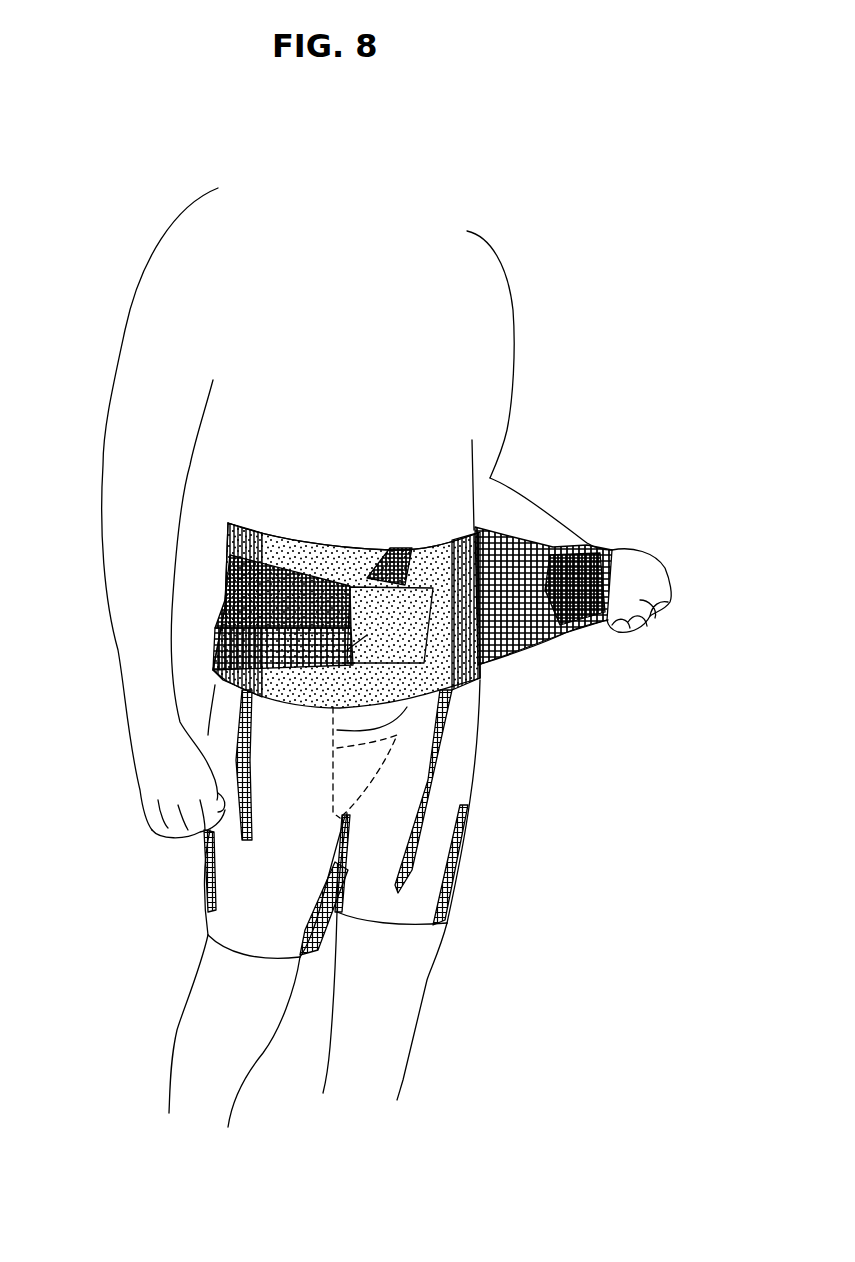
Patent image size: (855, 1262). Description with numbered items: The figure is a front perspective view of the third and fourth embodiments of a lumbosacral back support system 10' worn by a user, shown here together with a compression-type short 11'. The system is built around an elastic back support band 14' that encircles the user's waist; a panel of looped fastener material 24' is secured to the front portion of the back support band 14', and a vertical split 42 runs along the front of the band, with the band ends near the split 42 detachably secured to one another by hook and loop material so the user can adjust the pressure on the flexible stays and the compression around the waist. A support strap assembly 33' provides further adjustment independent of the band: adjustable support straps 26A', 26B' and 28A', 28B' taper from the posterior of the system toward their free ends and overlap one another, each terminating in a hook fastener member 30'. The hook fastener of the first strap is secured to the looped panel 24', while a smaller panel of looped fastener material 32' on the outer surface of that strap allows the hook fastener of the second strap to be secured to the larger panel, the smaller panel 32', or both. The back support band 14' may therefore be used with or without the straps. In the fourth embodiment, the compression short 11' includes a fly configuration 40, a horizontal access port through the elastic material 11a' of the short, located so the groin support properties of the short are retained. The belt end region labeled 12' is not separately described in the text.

The lumbosacral back support system 10' is at (578, 550).
The compression-type short 11' is at (372, 886).
The elastic material 11a' is at (473, 791).
The belt 12' is at (346, 512).
The back support band 14' is at (255, 601).
The panel of fastener material 24' is at (441, 598).
The adjustable support strap 26A' is at (199, 591).
The adjustable support strap 26B' is at (200, 648).
The adjustable support strap 28A' is at (550, 580).
The adjustable support strap 28B' is at (547, 652).
The hook fastener member 30' is at (610, 574).
The smaller panel of looped fastener material 32' is at (354, 668).
The support strap assembly 33' is at (265, 592).
The fly configuration 40 is at (400, 744).
The vertical split 42 is at (376, 532).